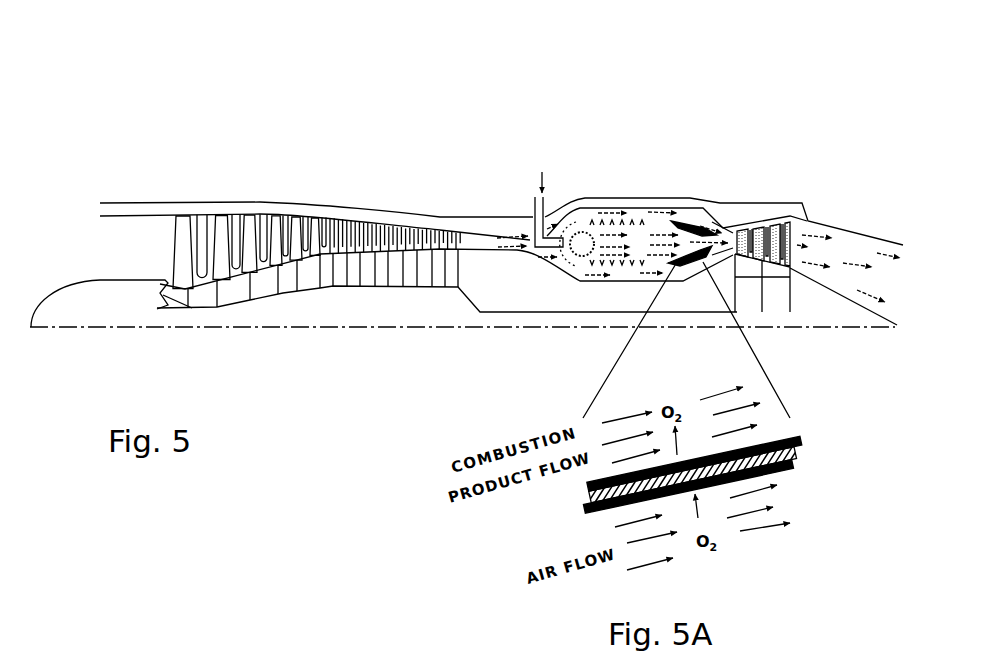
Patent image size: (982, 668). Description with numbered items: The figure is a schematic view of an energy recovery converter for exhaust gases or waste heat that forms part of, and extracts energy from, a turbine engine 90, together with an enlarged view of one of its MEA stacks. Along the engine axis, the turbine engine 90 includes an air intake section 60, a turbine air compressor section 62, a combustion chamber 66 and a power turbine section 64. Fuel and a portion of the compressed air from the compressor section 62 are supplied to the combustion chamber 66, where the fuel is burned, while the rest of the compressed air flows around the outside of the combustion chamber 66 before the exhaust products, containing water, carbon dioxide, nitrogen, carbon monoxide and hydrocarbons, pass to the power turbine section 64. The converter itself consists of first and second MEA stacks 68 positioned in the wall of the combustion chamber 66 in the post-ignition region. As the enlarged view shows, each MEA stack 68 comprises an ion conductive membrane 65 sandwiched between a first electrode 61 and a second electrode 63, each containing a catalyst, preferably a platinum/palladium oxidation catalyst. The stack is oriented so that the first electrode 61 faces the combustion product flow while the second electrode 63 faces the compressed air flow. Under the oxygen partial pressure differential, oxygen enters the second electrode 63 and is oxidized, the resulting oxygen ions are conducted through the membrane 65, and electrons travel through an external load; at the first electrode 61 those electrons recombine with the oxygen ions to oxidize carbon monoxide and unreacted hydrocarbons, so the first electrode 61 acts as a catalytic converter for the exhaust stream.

In FIG. 5, the air intake section 60 is at (84, 232).
In FIG. 5, the turbine air compressor section 62 is at (303, 192).
In FIG. 5, the power turbine section 64 is at (778, 193).
In FIG. 5, the combustion chamber 66 is at (591, 223).
In FIG. 5, the MEA stacks 68 is at (708, 208).
In FIG. 5, the turbine engine 90 is at (885, 72).
In FIG. 5A, the first electrode 61 is at (783, 435).
In FIG. 5A, the second electrode 63 is at (790, 468).
In FIG. 5A, the ion conductive membrane 65 is at (582, 506).